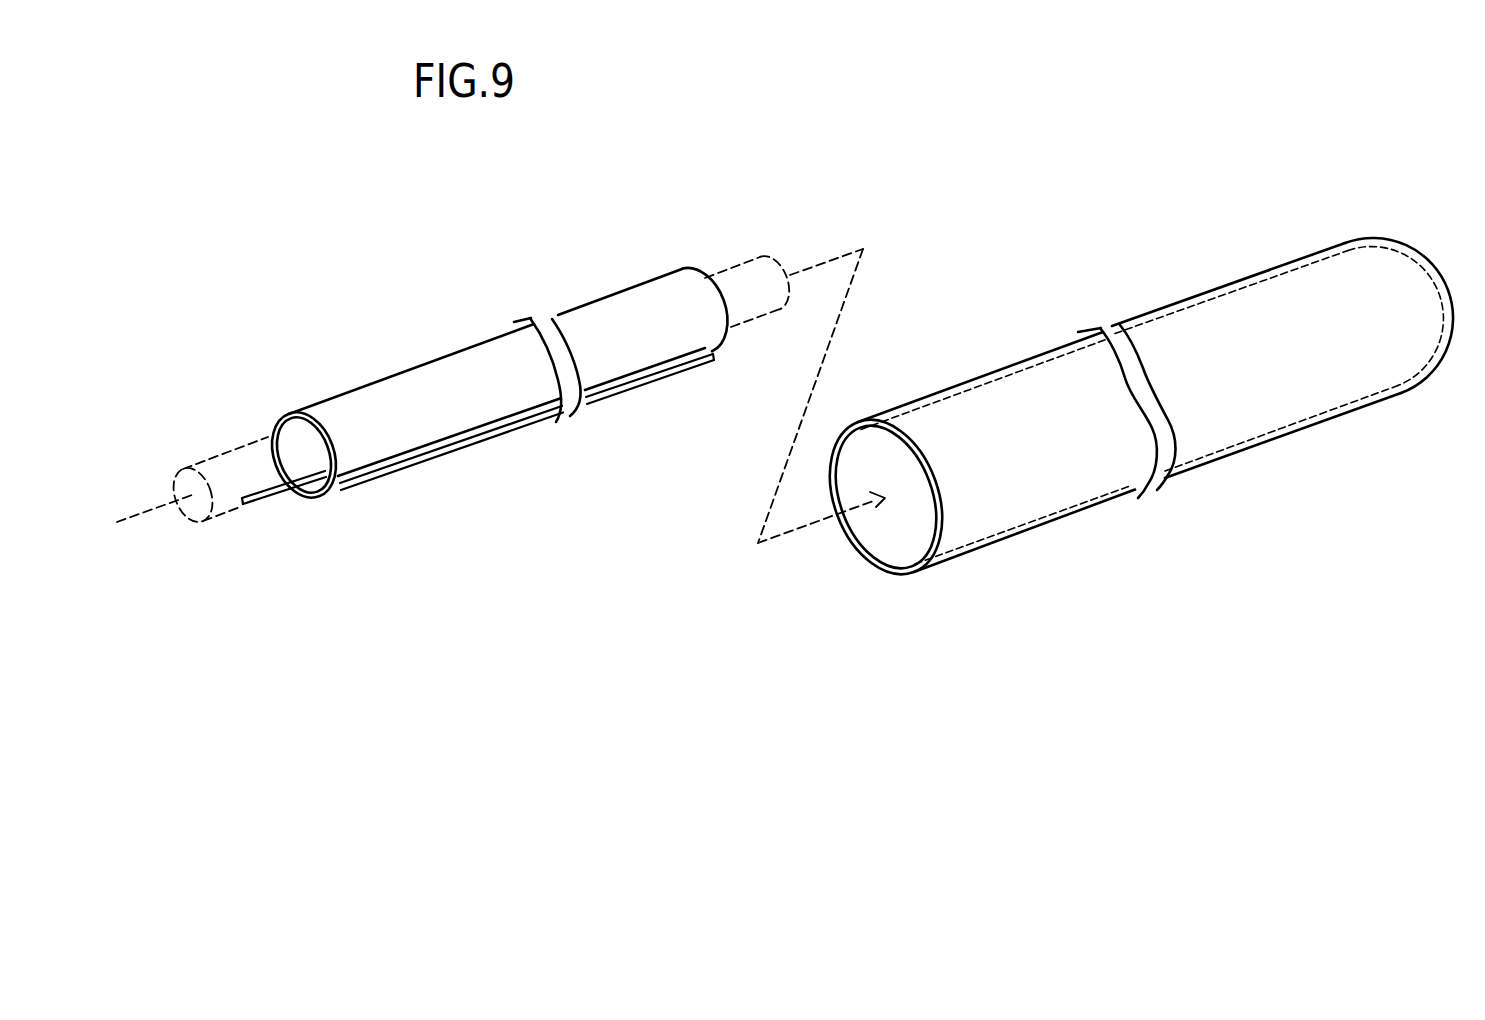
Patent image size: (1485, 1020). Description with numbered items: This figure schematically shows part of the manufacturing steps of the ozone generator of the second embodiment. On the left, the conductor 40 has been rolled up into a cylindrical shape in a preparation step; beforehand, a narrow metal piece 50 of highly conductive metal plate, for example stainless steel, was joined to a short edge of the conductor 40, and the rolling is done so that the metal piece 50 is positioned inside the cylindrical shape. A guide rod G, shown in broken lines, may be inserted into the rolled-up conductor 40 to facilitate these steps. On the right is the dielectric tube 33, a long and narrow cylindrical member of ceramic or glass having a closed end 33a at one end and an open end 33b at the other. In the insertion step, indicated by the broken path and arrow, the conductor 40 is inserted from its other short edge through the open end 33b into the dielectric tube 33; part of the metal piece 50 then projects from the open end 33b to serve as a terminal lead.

The dielectric tube 33 is at (1227, 322).
The closed end 33a is at (1442, 285).
The open end 33b is at (902, 577).
The conductor 40 is at (423, 427).
The metal piece 50 is at (277, 498).
The guide rod G is at (743, 275).